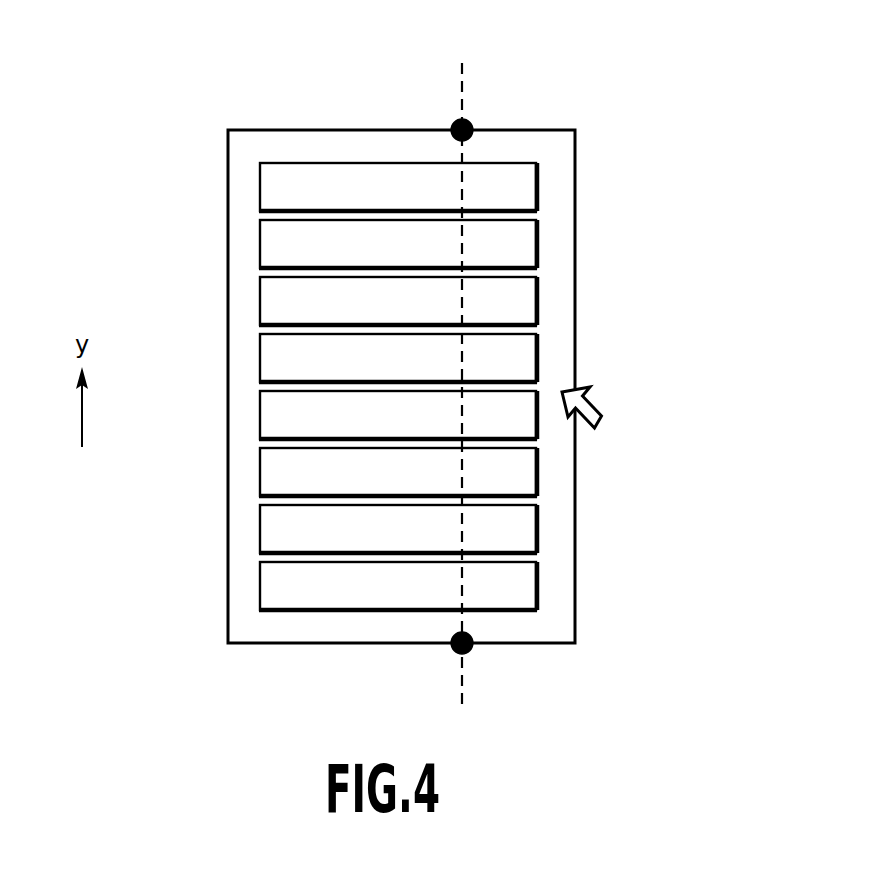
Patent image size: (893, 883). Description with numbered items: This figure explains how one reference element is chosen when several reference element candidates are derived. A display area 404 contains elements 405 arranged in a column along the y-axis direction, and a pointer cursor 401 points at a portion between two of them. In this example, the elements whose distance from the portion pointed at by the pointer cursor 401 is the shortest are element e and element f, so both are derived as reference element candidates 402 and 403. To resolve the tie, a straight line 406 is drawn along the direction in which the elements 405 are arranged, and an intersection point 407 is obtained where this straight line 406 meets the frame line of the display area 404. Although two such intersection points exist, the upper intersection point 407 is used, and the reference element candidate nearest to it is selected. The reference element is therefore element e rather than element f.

The pointer cursor 401 is at (594, 401).
The reference element candidate 402 is at (536, 350).
The reference element candidate 403 is at (536, 428).
The display area 404 is at (576, 176).
The elements 405 is at (392, 386).
The straight line 406 is at (462, 73).
The intersection point 407 is at (469, 122).